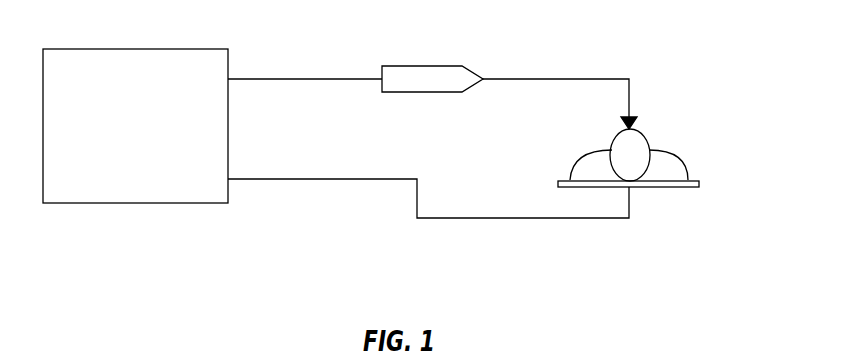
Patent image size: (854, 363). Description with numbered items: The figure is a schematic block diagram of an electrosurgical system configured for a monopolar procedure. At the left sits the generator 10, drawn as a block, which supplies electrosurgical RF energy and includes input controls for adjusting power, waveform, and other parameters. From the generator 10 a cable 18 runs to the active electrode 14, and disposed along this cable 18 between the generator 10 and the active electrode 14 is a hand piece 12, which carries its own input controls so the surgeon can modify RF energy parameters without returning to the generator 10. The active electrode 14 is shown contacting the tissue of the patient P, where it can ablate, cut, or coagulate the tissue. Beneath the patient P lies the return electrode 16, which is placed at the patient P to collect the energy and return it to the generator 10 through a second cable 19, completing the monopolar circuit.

The generator 10 is at (90, 48).
The hand piece 12 is at (428, 65).
The active electrode 14 is at (636, 126).
The return electrode 16 is at (687, 188).
The cable 18 is at (325, 78).
The cable 19 is at (530, 220).
The patient P is at (697, 142).